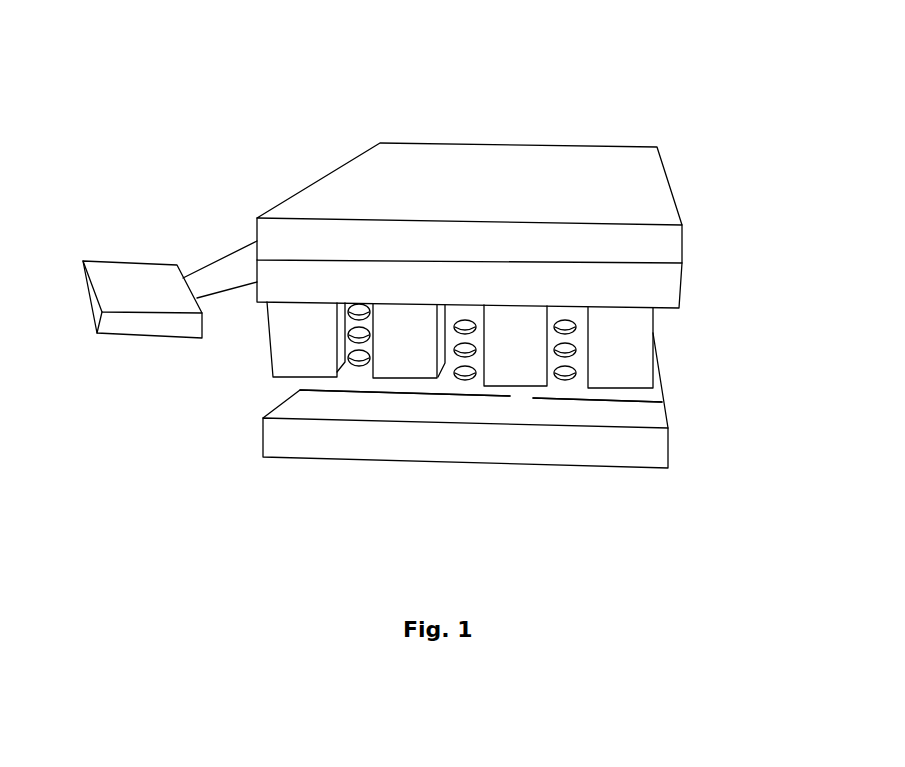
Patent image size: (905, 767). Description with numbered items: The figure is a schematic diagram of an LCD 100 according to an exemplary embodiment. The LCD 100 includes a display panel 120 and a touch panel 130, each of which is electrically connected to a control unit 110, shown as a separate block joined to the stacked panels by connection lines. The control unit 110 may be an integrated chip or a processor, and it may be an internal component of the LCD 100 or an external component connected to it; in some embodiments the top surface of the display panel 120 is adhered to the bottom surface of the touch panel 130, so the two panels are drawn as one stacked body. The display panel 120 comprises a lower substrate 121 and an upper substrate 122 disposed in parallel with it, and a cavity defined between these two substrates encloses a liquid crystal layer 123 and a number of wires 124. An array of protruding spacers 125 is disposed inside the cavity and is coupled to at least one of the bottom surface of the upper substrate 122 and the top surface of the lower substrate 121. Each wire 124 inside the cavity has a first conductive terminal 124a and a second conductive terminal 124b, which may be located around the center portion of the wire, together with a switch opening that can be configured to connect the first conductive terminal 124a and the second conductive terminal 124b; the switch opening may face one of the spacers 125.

The LCD 100 is at (437, 28).
The control unit 110 is at (103, 273).
The display panel 120 is at (263, 362).
The lower substrate 121 is at (660, 455).
The upper substrate 122 is at (662, 288).
The liquid crystal layer 123 is at (577, 372).
The wires 124 is at (655, 402).
The first conductive terminal 124a is at (512, 398).
The second conductive terminal 124b is at (533, 398).
The protruding spacers 125 is at (647, 333).
The touch panel 130 is at (662, 198).